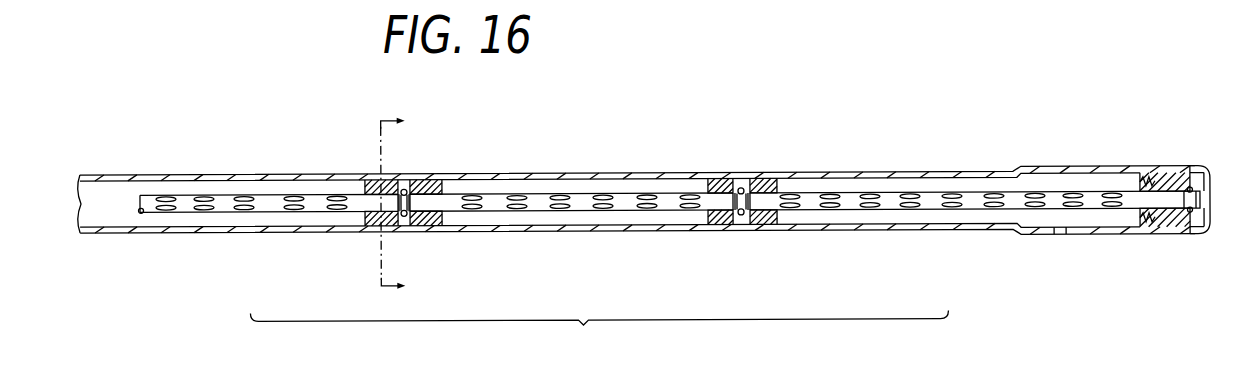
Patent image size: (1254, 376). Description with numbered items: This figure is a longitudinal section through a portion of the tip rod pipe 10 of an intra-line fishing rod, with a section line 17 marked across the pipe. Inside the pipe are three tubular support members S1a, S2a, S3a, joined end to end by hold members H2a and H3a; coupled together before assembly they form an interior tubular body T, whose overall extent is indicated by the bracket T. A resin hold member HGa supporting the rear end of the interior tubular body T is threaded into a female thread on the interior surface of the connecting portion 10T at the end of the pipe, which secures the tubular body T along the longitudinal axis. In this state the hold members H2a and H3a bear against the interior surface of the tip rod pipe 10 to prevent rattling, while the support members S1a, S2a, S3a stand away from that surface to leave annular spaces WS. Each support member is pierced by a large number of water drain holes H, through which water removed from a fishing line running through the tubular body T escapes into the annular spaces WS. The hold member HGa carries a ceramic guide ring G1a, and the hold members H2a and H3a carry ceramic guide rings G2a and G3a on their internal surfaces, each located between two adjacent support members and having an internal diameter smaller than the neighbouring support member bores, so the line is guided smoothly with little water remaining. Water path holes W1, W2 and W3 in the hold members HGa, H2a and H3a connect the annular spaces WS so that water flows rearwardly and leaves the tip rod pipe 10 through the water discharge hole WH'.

The tip rod pipe 10 is at (547, 175).
The connecting portion 10T is at (1127, 172).
The water discharge hole WH' is at (1064, 252).
The hold member HGa is at (1203, 171).
The water path hole W1 is at (1172, 171).
The ceramic guide ring G1a is at (1193, 228).
The support member S1a is at (928, 202).
The water path hole W2 is at (765, 181).
The ceramic guide ring G2a is at (742, 189).
The hold member H2a is at (743, 218).
The support member S2a is at (572, 195).
The water drain holes H is at (647, 197).
The annular space WS is at (588, 190).
The water path hole W3 is at (436, 181).
The ceramic guide ring G3a is at (405, 189).
The hold member H3a is at (406, 217).
The support member S3a is at (272, 207).
The section line 17- 17 is at (392, 201).
The interior tubular body T is at (599, 335).